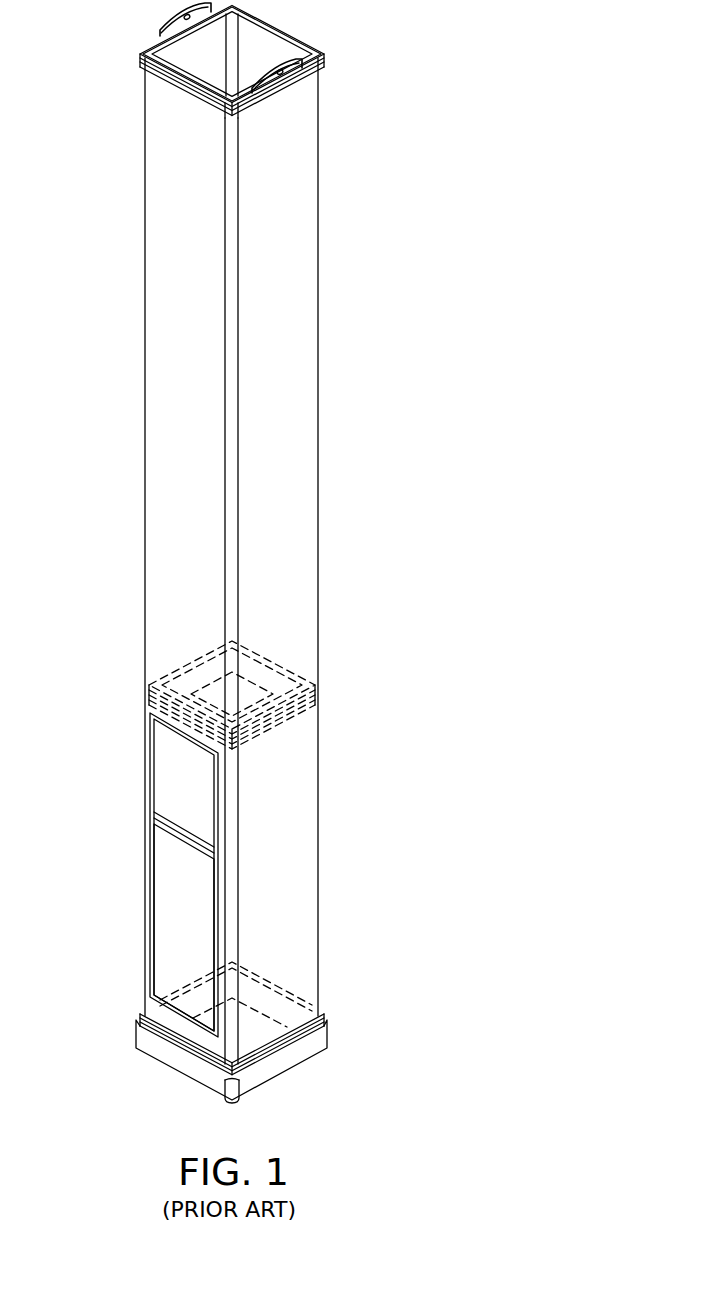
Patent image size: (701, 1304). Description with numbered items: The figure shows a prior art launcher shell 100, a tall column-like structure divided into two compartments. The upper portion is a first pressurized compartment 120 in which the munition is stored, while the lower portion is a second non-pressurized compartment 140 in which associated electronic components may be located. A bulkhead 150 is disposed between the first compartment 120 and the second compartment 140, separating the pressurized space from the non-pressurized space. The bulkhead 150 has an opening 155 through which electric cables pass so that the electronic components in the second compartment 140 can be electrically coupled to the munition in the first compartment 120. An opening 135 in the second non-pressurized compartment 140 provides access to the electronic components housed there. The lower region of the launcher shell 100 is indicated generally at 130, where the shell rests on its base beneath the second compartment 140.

The launcher shell 100 is at (383, 135).
The first pressurized compartment 120 is at (177, 465).
The base 130 is at (283, 907).
The opening 135 is at (183, 915).
The second non-pressurized compartment 140 is at (178, 773).
The bulkhead 150 is at (292, 690).
The opening 155 is at (247, 692).